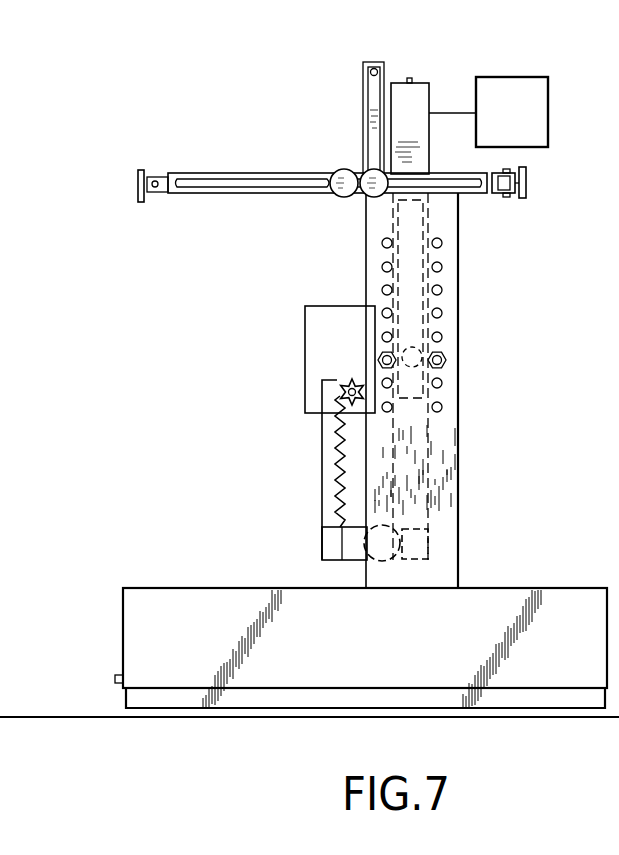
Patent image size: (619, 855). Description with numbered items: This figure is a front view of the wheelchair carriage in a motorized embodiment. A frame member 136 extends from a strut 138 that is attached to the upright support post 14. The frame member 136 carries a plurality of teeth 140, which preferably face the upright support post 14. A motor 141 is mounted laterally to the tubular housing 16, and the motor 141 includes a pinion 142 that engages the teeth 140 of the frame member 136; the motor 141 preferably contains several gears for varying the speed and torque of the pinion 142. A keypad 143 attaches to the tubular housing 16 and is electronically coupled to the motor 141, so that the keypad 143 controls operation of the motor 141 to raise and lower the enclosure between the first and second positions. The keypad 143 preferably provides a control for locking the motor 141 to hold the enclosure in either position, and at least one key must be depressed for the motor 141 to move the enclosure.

The upright support post 14 is at (422, 503).
The tubular housing 16 is at (418, 92).
The keypad 143 is at (530, 85).
The motor 141 is at (313, 317).
The pinion 142 is at (343, 390).
The teeth 140 is at (335, 467).
The frame member 136 is at (325, 495).
The strut 138 is at (347, 542).